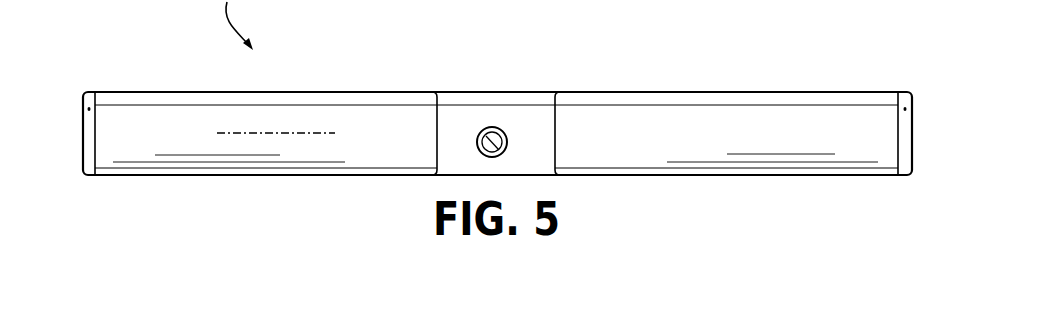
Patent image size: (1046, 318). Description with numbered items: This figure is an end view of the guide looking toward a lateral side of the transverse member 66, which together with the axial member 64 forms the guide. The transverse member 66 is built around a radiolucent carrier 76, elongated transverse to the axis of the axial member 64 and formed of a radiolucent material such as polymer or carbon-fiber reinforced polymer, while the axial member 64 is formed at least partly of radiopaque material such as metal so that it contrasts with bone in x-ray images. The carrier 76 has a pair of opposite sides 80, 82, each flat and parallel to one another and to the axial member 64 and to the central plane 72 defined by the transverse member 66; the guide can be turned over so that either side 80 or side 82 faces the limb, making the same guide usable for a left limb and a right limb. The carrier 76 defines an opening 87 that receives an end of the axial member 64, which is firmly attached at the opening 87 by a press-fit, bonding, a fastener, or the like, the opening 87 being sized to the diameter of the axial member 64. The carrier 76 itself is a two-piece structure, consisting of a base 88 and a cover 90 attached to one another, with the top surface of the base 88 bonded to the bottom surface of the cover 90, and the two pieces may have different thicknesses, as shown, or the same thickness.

The axial member 64 is at (477, 143).
The transverse member 66 is at (315, 86).
The plane 72 is at (234, 133).
The carrier 76 is at (792, 92).
The side 80 is at (678, 178).
The side 82 is at (685, 92).
The opening 87 is at (490, 128).
The base 88 is at (83, 147).
The cover 90 is at (165, 92).